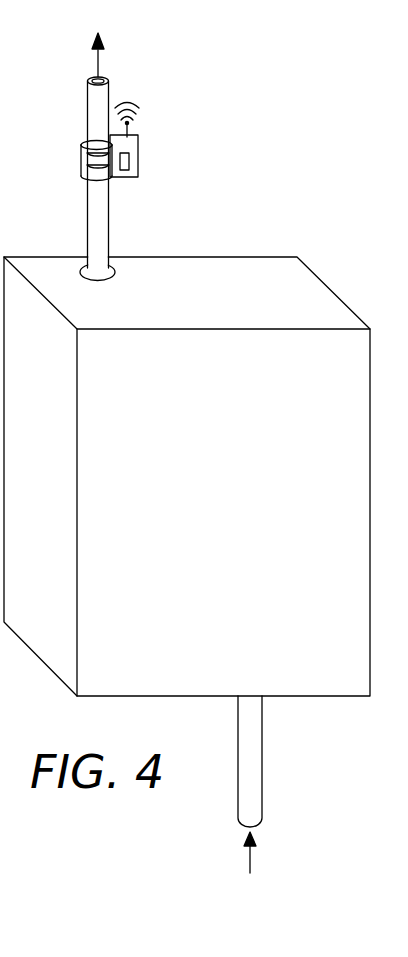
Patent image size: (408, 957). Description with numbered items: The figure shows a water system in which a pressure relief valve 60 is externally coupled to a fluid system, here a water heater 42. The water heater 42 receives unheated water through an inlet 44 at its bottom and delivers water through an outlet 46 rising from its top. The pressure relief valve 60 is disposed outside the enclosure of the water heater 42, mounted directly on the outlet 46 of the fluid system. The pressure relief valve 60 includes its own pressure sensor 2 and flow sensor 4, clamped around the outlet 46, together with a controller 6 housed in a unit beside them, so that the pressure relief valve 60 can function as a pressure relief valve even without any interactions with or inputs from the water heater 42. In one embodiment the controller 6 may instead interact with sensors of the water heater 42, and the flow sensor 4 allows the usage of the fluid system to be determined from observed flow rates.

The pressure sensor 2 is at (88, 161).
The flow sensor 4 is at (88, 172).
The controller 6 is at (130, 163).
The water heater 42 is at (326, 296).
The inlet 44 is at (246, 761).
The outlet 46 is at (102, 215).
The pressure relief valve 60 is at (138, 141).